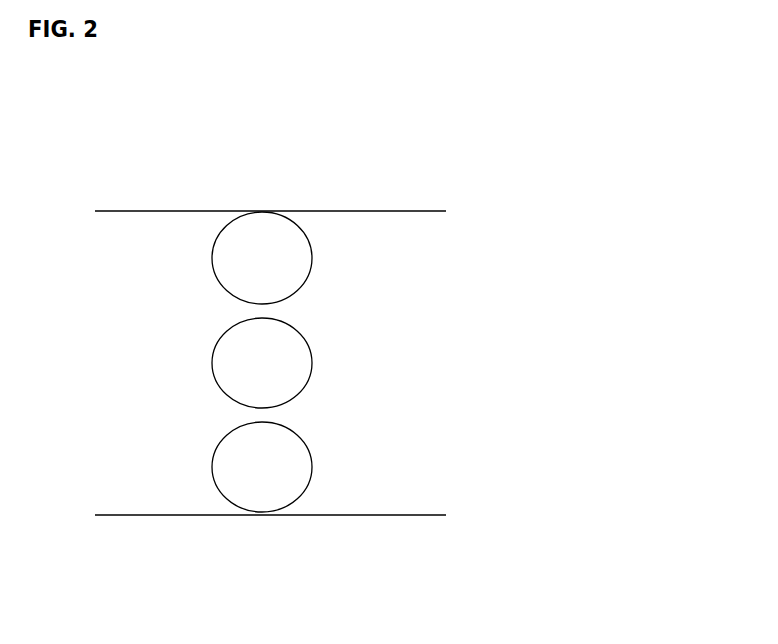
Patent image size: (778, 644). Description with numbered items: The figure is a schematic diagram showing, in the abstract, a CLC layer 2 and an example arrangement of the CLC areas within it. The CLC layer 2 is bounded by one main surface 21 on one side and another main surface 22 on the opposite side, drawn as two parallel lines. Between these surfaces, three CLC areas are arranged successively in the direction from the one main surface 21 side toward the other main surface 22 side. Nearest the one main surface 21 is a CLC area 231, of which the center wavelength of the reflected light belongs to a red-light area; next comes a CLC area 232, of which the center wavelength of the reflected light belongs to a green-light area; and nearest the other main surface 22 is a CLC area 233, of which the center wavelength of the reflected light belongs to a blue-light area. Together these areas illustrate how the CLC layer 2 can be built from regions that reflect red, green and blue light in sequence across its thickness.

The CLC layer 2 is at (114, 182).
The one main surface 21 is at (384, 210).
The another main surface 22 is at (348, 515).
The CLC area 231 is at (268, 260).
The CLC area 232 is at (248, 365).
The CLC area 233 is at (291, 466).